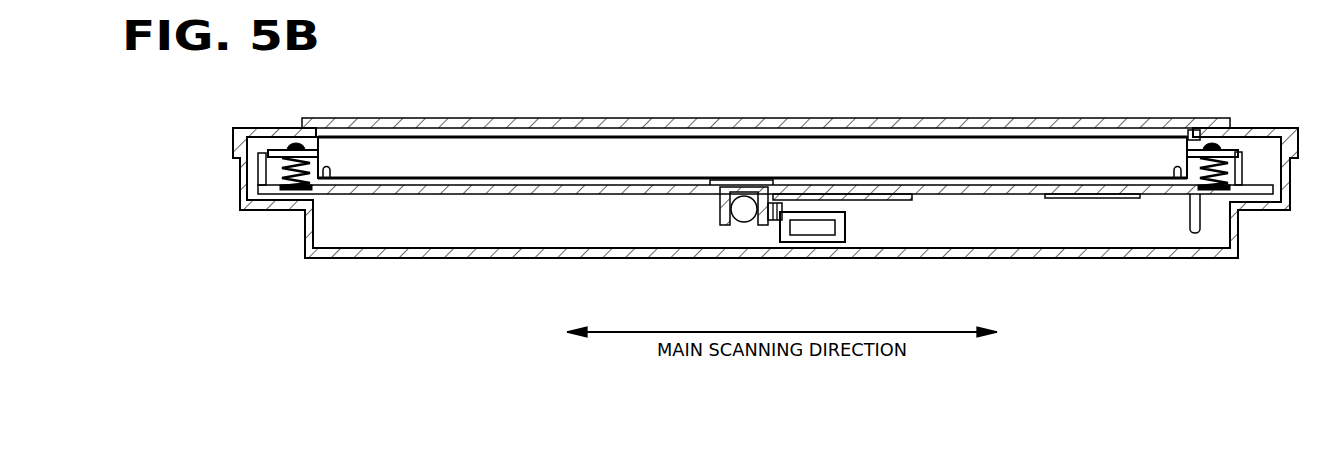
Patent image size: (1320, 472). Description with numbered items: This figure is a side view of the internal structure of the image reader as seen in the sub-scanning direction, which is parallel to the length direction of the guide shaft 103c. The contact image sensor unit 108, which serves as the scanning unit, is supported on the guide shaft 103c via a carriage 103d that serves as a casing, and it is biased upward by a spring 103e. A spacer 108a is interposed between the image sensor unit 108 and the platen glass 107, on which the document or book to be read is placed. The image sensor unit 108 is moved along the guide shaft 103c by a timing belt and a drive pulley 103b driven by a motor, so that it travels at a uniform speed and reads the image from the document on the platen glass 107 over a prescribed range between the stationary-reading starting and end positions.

The platen glass 107 is at (483, 119).
The contact image sensor unit 108 is at (578, 153).
The spacer 108a is at (330, 134).
The spring 103e is at (282, 150).
The guide shaft 103c is at (747, 222).
The drive pulley 103b is at (815, 225).
The carriage 103d is at (1177, 195).